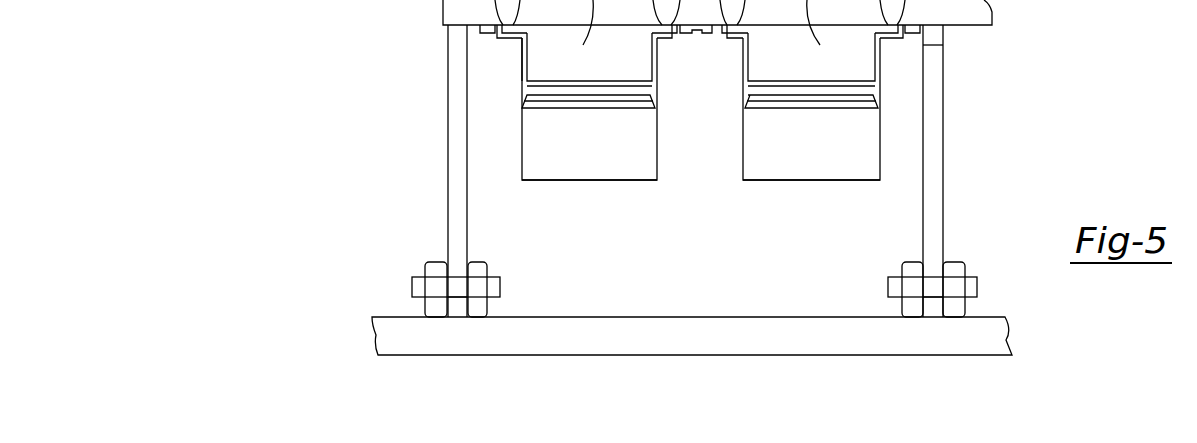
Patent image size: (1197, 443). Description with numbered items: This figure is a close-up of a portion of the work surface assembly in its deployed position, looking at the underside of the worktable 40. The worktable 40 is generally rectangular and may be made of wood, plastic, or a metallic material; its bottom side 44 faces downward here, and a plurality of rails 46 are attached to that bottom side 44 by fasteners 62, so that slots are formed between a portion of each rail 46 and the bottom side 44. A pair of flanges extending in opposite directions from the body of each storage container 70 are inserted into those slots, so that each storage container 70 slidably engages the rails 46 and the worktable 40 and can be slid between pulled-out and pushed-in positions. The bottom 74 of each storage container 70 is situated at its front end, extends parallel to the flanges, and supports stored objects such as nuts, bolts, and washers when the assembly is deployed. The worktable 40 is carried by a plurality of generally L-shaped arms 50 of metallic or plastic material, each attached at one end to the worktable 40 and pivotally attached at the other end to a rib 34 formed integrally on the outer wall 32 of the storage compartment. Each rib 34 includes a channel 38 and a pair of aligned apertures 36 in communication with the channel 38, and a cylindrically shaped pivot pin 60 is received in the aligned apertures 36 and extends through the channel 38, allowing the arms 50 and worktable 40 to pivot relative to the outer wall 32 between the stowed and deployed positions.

The outer wall 32 is at (710, 317).
The rib 34 is at (424, 305).
The aperture 36 is at (428, 277).
The channel 38 is at (457, 308).
The worktable 40 is at (1000, 15).
The bottom side 44 is at (965, 27).
The rail 46 is at (503, 40).
The arm 50 is at (448, 143).
The pivot pin 60 is at (500, 287).
The fastener 62 is at (487, 35).
The storage container 70 is at (547, 182).
The bottom 74 is at (590, 182).